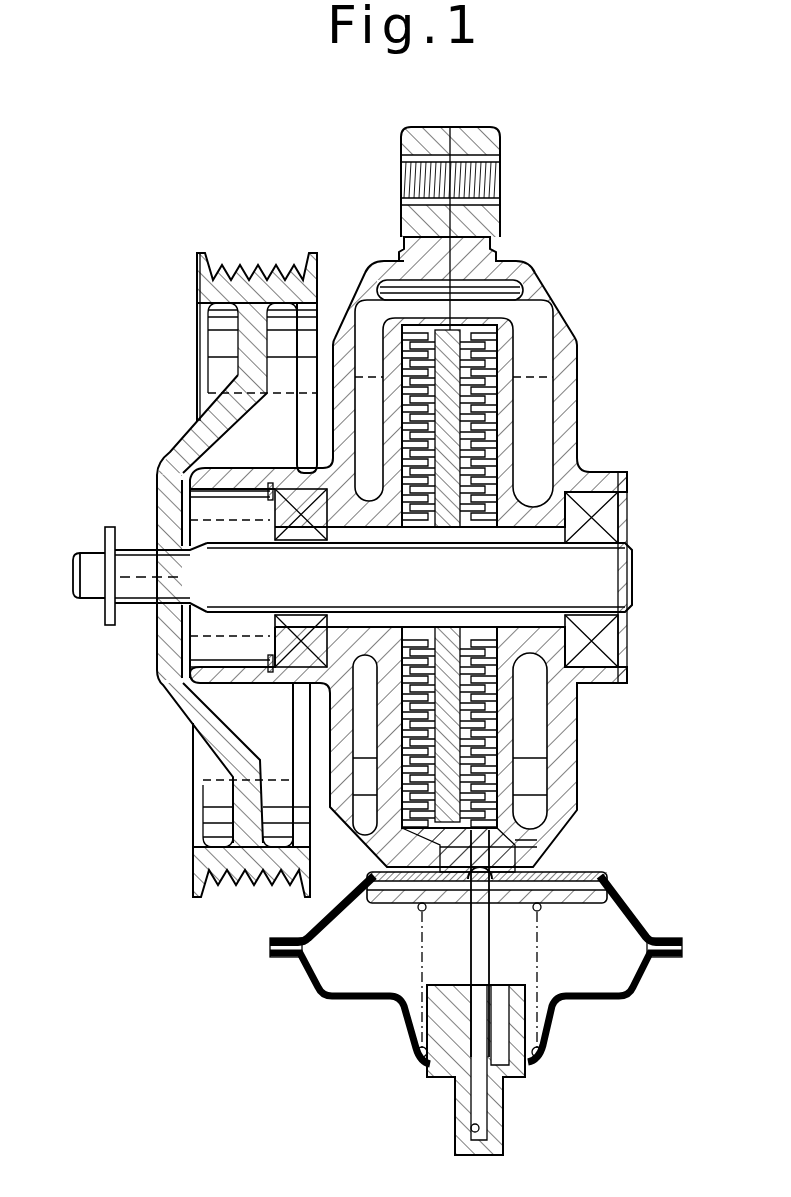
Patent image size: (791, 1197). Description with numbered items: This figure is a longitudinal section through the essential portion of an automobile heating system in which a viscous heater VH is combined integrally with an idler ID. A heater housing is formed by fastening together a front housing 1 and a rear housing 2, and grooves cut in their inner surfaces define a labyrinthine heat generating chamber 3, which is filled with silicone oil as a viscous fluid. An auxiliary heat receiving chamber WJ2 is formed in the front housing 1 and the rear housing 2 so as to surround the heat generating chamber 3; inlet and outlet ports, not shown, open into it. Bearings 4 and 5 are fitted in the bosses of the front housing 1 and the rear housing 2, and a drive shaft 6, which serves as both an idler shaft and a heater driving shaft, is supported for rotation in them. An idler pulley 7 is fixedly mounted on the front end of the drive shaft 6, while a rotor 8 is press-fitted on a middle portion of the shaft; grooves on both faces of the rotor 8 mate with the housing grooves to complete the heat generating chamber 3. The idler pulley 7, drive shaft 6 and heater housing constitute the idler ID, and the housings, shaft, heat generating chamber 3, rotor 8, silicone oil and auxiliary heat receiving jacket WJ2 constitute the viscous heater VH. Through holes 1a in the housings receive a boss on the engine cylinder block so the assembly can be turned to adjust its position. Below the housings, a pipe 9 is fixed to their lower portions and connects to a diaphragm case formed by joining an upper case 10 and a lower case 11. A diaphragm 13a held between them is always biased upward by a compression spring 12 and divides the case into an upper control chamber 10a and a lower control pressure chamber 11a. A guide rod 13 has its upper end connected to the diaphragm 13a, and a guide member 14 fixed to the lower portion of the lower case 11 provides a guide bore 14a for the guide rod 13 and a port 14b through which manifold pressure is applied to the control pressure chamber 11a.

The front housing 1 is at (371, 275).
The through holes 1a is at (482, 182).
The rear housing 2 is at (530, 274).
The labyrinthine heat generating chamber 3 is at (478, 330).
The bearing 4 is at (297, 499).
The bearing 5 is at (596, 497).
The drive shaft 6 is at (612, 573).
The idler pulley 7 is at (175, 451).
The rotor 8 is at (445, 744).
The pipe 9 is at (520, 838).
The upper case 10 is at (300, 924).
The upper control chamber 10a is at (612, 882).
The lower case 11 is at (630, 1002).
The lower control pressure chamber 11a is at (322, 977).
The compression spring 12 is at (542, 1066).
The guide rod 13 is at (474, 950).
The diaphragm 13a is at (612, 925).
The guide member 14 is at (460, 1101).
The guide bore 14a is at (470, 1134).
The port 14b is at (512, 1080).
The idler ID is at (321, 240).
The viscous heater VH is at (582, 301).
The auxiliary heat receiving chamber WJ2 is at (560, 398).